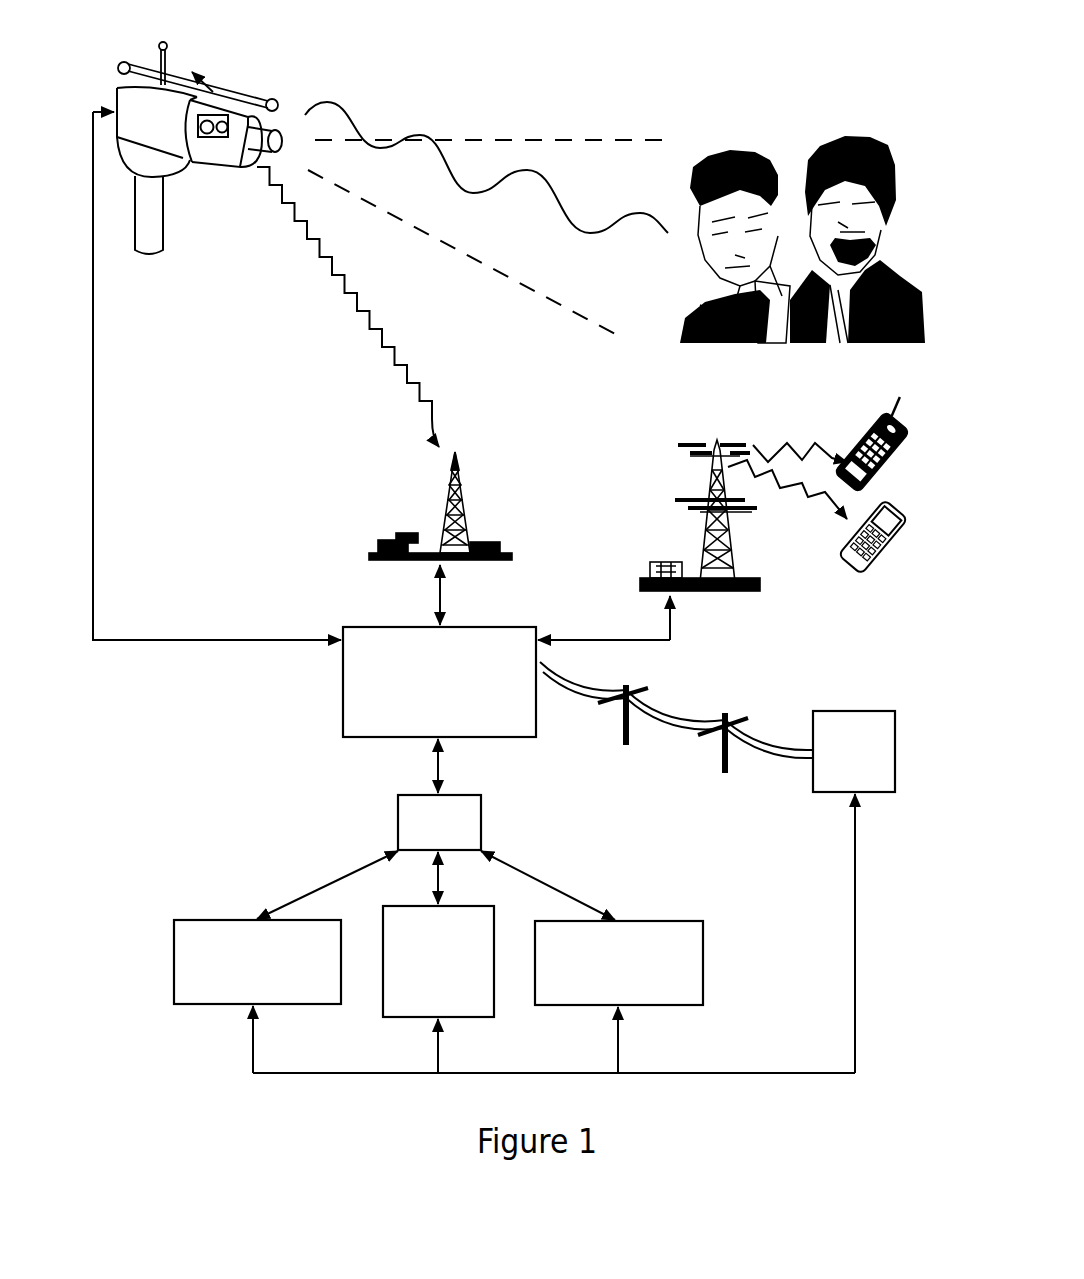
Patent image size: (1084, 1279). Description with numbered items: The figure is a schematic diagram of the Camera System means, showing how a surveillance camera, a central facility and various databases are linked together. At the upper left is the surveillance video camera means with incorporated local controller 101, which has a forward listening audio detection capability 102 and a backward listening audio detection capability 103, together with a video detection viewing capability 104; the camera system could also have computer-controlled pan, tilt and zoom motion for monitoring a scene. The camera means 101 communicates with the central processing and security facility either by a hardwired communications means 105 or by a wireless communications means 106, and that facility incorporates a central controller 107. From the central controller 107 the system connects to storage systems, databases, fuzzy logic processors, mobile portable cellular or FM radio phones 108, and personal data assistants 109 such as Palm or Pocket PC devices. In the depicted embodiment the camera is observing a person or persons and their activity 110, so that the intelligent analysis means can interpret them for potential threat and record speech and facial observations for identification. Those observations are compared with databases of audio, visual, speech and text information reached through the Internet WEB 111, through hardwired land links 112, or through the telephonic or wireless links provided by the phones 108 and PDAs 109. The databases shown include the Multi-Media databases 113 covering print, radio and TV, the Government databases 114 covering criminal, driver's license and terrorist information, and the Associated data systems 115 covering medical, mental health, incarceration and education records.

The surveillance video camera means with incorporated local controller 101 is at (198, 173).
The forward listening audio detection capability 102 is at (277, 98).
The backward listening audio detection capability 103 is at (130, 60).
The video detection viewing capability 104 is at (307, 112).
The hardwired communications means 105 is at (93, 320).
The wireless communications means 106 is at (195, 54).
The central controller 107 is at (362, 625).
The mobile portable cellular or FM radio phone 108 is at (910, 477).
The personal data assistant 109 is at (853, 563).
The person or persons and their activity 110 is at (786, 147).
The Internet WEB 111 is at (398, 817).
The hardwired land links 112 is at (842, 794).
The Multi-Media databases 113 is at (423, 1018).
The Government databases 114 is at (230, 1005).
The Associated data systems 115 is at (600, 1006).